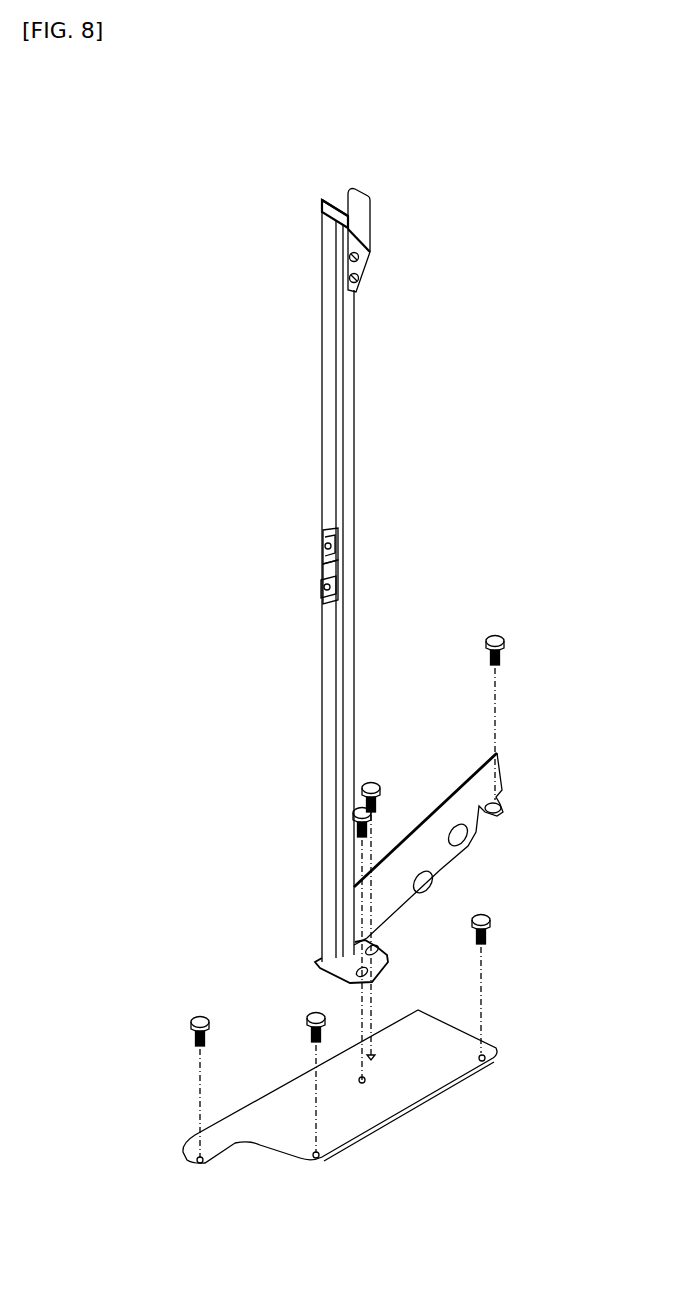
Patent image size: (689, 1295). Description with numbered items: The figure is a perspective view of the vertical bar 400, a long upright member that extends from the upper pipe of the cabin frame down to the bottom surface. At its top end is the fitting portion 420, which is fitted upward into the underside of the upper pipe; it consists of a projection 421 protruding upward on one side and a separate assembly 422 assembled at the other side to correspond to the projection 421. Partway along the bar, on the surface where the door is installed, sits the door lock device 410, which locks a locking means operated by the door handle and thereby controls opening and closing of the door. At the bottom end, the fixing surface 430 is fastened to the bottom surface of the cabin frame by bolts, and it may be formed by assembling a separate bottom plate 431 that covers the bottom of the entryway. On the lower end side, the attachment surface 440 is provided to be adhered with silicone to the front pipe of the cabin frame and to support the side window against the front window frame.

The vertical bar 400 is at (333, 413).
The door lock device 410 is at (320, 592).
The fitting portion 420 is at (343, 115).
The projection 421 is at (320, 203).
The separate assembly 422 is at (365, 194).
The fixing surface 430 is at (390, 958).
The bottom plate 431 is at (425, 1096).
The attachment surface 440 is at (422, 816).